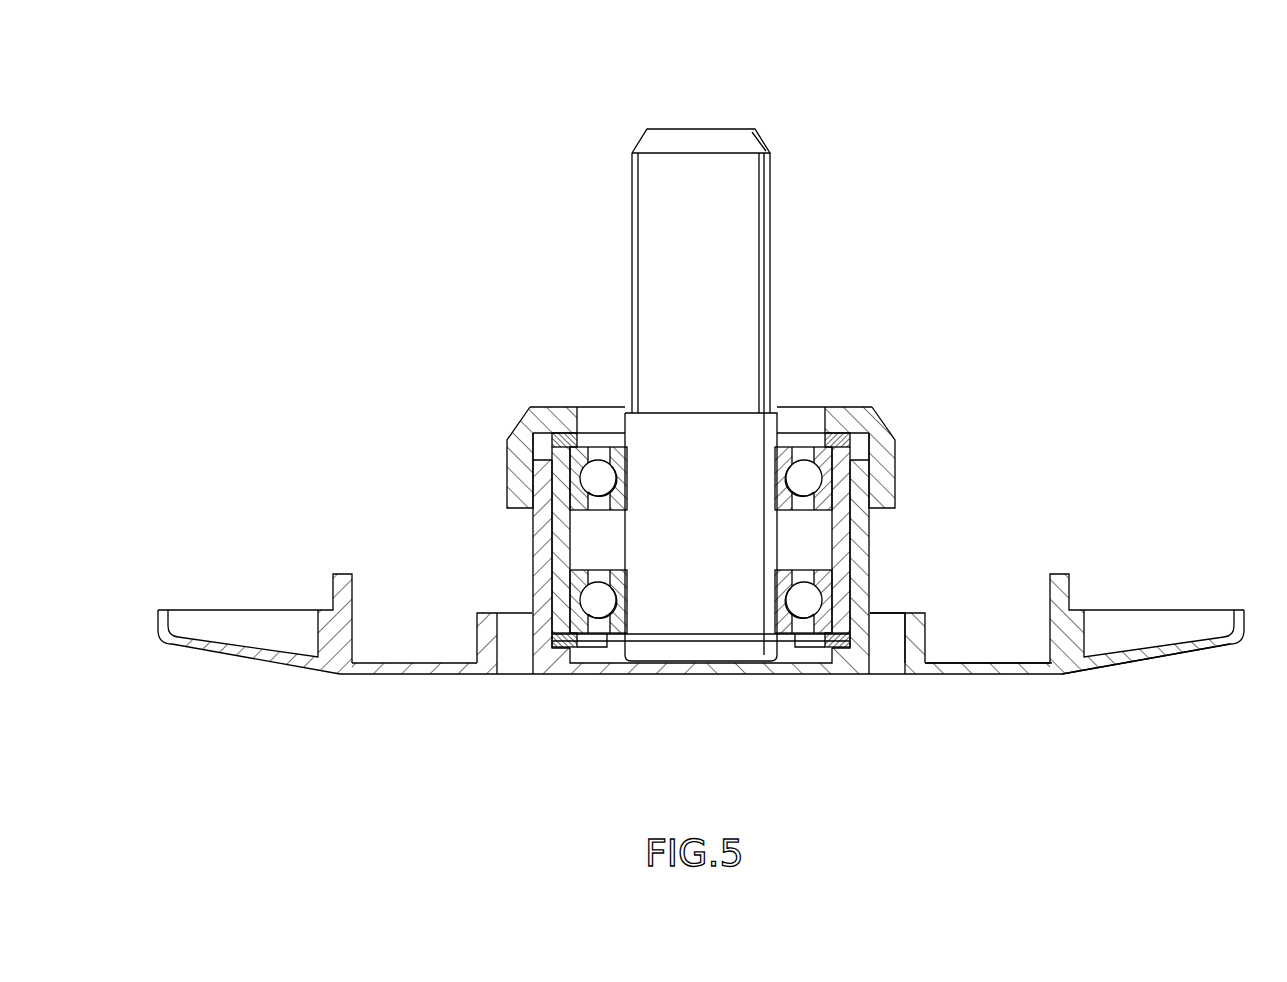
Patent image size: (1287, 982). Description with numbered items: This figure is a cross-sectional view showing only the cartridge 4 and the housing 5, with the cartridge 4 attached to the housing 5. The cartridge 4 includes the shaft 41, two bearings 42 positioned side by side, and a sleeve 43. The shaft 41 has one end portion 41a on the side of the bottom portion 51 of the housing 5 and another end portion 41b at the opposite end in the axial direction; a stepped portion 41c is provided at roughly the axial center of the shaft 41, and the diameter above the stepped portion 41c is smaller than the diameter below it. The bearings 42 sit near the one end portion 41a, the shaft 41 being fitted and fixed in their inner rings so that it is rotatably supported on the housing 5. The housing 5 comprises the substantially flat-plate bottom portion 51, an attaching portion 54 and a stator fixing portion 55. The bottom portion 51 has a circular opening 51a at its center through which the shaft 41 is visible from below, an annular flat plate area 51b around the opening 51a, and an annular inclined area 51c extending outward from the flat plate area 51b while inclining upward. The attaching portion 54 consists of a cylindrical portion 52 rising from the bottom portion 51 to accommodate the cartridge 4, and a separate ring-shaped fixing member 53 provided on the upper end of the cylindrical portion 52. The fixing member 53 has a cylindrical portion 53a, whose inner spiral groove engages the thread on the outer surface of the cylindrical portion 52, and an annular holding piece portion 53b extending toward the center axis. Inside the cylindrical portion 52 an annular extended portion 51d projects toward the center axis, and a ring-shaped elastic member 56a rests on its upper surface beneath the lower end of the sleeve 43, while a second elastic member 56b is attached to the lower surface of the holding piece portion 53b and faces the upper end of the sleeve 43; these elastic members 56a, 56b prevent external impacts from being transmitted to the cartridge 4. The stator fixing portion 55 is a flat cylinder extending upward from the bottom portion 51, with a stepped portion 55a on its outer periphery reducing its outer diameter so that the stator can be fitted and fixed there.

The cartridge 4 is at (668, 425).
The shaft 41 is at (701, 408).
The one end portion 41a is at (655, 662).
The other end portion 41b is at (695, 129).
The stepped portion 41c is at (738, 413).
The bearing 42 is at (831, 340).
The sleeve 43 is at (552, 530).
The housing 5 is at (701, 568).
The bottom portion 51 is at (785, 634).
The opening 51a is at (732, 674).
The flat plate area 51b is at (945, 674).
The inclined area 51c is at (1122, 657).
The extended portion 51d is at (822, 655).
The cylindrical portion 52 is at (876, 527).
The fixing member 53 is at (734, 421).
The cylindrical portion 53a is at (512, 490).
The holding piece portion 53b is at (557, 415).
The attaching portion 54 is at (755, 504).
The stator fixing portion 55 is at (701, 584).
The stepped portion 55a is at (1072, 613).
The elastic member 56a is at (588, 650).
The elastic member 56b is at (818, 447).